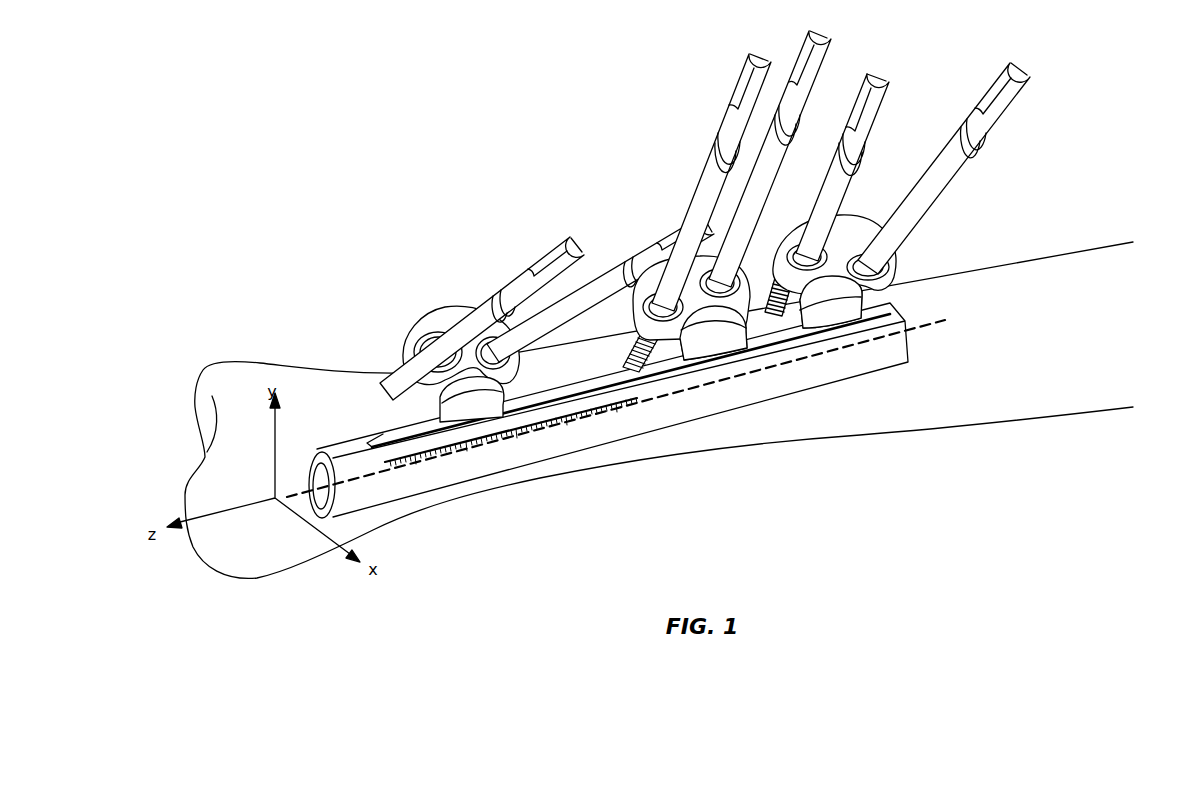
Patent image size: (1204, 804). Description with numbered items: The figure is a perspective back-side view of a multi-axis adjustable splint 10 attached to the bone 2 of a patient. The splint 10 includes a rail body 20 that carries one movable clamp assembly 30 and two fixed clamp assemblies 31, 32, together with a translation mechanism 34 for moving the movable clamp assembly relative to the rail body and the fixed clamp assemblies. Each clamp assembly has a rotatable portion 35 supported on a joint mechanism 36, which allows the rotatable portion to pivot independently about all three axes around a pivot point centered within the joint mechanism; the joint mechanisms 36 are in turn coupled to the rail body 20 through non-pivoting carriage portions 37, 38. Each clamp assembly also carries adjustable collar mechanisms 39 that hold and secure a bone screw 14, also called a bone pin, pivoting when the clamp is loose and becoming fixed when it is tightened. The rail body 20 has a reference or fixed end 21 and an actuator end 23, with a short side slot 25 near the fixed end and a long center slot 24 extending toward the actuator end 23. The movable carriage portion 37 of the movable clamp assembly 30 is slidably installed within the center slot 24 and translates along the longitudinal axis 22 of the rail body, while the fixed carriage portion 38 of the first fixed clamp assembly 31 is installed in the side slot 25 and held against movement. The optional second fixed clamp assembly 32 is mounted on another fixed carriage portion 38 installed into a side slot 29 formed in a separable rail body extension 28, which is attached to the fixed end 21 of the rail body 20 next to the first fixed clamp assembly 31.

The bone 2 is at (1070, 385).
The multi-axis adjustable splint 10 is at (553, 218).
The bone screw 14 is at (745, 74).
The rail body 20 is at (397, 493).
The fixed end 21 is at (792, 384).
The longitudinal axis 22 is at (930, 328).
The actuator end 23 is at (308, 510).
The center slot 24 is at (571, 375).
The side slot 25 is at (757, 225).
The rail body extension 28 is at (892, 357).
The side slot 29 is at (780, 348).
The movable clamp assembly 30 is at (627, 312).
The first fixed clamp assembly 31 is at (751, 287).
The second fixed clamp assembly 32 is at (864, 208).
The translation mechanism 34 is at (398, 430).
The rotatable portion 35 is at (445, 312).
The joint mechanism 36 is at (490, 392).
The movable carriage portion 37 is at (467, 413).
The fixed carriage portion 38 is at (690, 345).
The adjustable collar mechanism 39 is at (408, 340).